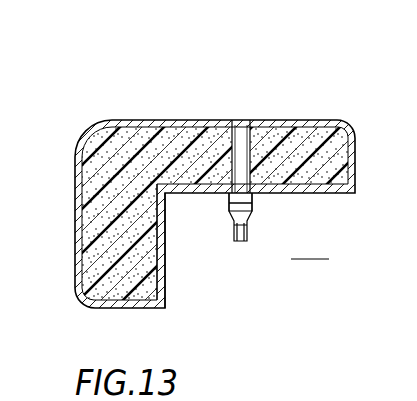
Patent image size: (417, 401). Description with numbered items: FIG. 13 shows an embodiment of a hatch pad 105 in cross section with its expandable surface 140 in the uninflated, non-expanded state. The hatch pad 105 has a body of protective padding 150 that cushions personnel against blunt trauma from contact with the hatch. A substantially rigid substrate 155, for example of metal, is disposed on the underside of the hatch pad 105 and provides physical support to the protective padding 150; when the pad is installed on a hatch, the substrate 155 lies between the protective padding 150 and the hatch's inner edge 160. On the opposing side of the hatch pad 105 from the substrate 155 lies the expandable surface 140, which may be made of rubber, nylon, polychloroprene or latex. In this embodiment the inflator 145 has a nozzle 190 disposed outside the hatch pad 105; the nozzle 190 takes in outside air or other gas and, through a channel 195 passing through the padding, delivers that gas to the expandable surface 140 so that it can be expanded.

The hatch pad 105 is at (212, 182).
The expandable surface 140 is at (78, 168).
The protective padding 150 is at (118, 140).
The substrate 155 is at (184, 196).
The channel 195 is at (240, 126).
The inflator 145 is at (242, 243).
The nozzle 190 is at (253, 203).
The inner edge 160 is at (310, 247).